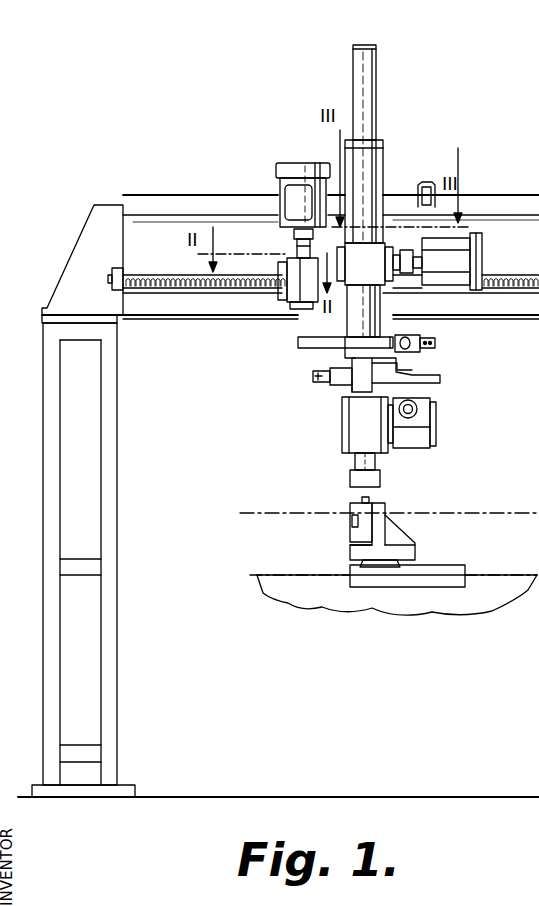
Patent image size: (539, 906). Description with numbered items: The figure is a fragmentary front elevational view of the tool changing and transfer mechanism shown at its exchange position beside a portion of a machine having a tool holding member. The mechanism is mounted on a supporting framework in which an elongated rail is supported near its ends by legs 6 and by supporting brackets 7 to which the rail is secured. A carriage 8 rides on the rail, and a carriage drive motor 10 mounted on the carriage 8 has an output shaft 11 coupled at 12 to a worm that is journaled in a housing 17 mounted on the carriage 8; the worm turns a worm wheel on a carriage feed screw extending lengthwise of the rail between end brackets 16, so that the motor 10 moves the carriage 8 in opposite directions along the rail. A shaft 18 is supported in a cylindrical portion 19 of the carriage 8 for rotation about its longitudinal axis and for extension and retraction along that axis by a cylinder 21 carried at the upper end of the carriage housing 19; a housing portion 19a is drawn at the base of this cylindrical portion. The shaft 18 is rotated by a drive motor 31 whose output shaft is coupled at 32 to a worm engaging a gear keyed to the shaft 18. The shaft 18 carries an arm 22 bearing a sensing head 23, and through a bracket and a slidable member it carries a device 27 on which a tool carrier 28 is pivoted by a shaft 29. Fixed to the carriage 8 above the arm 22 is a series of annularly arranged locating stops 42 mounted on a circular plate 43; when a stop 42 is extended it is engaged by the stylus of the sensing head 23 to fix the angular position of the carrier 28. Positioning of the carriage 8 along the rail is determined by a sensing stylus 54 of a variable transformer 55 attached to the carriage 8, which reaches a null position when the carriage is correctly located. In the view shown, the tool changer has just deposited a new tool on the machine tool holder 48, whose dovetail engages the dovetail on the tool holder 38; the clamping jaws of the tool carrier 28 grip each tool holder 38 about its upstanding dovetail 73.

The legs 6 is at (108, 513).
The supporting brackets 7 is at (70, 275).
The carriage 8 is at (387, 178).
The carriage drive motor 10 is at (290, 163).
The output shaft 11 is at (298, 234).
The coupling 12 is at (294, 222).
The end brackets 16 is at (112, 270).
The housing 17 is at (300, 298).
The shaft 18 is at (372, 388).
The cylindrical portion 19 is at (370, 153).
The slide housing 19a is at (362, 268).
The cylinder 21 is at (377, 56).
The arm 22 is at (412, 371).
The sensing head 23 is at (413, 357).
The device 27 is at (417, 443).
The tool carrier 28 is at (356, 433).
The shaft 29 is at (400, 428).
The drive motor 31 is at (462, 250).
The coupling 32 is at (395, 278).
The tool holder 38 is at (352, 382).
The locating stops 42 is at (440, 345).
The circular plate 43 is at (302, 346).
The machine tool holder 48 is at (377, 528).
The sensing stylus 54 is at (424, 180).
The variable transformer 55 is at (420, 201).
The upstanding dovetail 73 is at (362, 497).